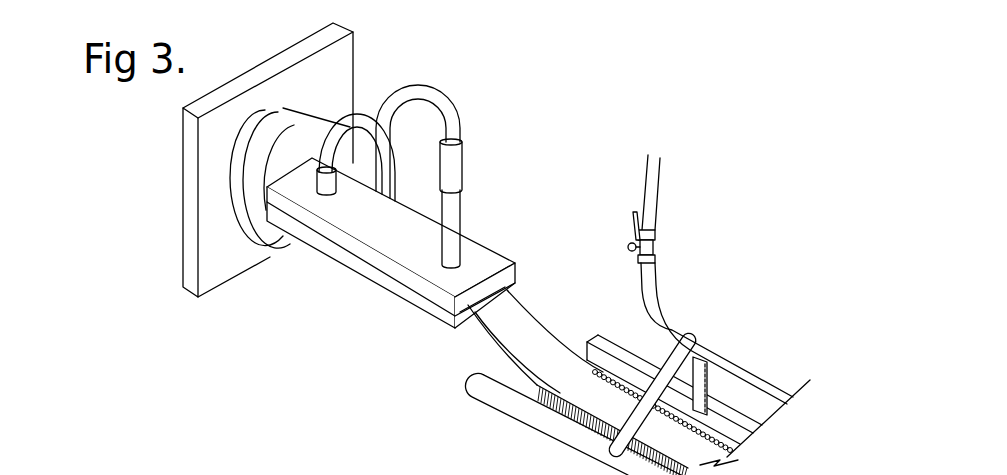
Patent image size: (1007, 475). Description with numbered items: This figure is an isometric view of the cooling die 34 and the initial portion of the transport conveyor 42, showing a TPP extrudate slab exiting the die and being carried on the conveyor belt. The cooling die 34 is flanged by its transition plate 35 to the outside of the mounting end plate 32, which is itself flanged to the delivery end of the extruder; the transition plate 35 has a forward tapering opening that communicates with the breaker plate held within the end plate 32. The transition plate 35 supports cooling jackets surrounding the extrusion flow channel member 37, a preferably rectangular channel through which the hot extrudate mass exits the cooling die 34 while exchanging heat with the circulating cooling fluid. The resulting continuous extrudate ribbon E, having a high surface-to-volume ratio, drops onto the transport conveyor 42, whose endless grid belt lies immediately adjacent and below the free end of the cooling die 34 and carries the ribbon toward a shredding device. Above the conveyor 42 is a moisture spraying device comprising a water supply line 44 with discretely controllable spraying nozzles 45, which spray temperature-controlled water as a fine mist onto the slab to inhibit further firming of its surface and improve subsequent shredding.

The mounting end plate 32 is at (205, 150).
The cooling die 34 is at (353, 247).
The transition plate 35 is at (252, 220).
The extrusion flow channel member 37 is at (486, 300).
The continuous extrudate ribbon E is at (518, 312).
The transport conveyor 42 is at (567, 417).
The water supply line 44 is at (658, 307).
The spraying nozzles 45 is at (707, 345).